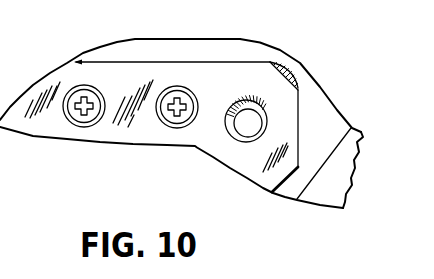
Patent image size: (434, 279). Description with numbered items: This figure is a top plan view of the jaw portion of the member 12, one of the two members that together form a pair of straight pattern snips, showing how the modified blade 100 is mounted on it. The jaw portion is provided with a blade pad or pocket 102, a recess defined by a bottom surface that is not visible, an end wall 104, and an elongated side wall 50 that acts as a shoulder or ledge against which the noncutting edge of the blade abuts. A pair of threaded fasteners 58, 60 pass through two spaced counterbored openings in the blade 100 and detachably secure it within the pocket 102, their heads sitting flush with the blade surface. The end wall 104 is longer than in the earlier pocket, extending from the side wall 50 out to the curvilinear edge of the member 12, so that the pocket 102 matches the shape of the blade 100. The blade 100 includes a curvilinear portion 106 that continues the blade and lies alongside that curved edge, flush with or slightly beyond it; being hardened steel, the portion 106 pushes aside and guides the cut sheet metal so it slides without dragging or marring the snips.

The blade 100 is at (20, 90).
The member 12 is at (331, 88).
The elongated side wall 50 is at (222, 66).
The blade pad or pocket 102 is at (298, 88).
The end wall 104 is at (299, 151).
The curvilinear portion 106 is at (240, 175).
The threaded fastener 58 is at (80, 116).
The threaded fastener 60 is at (173, 118).